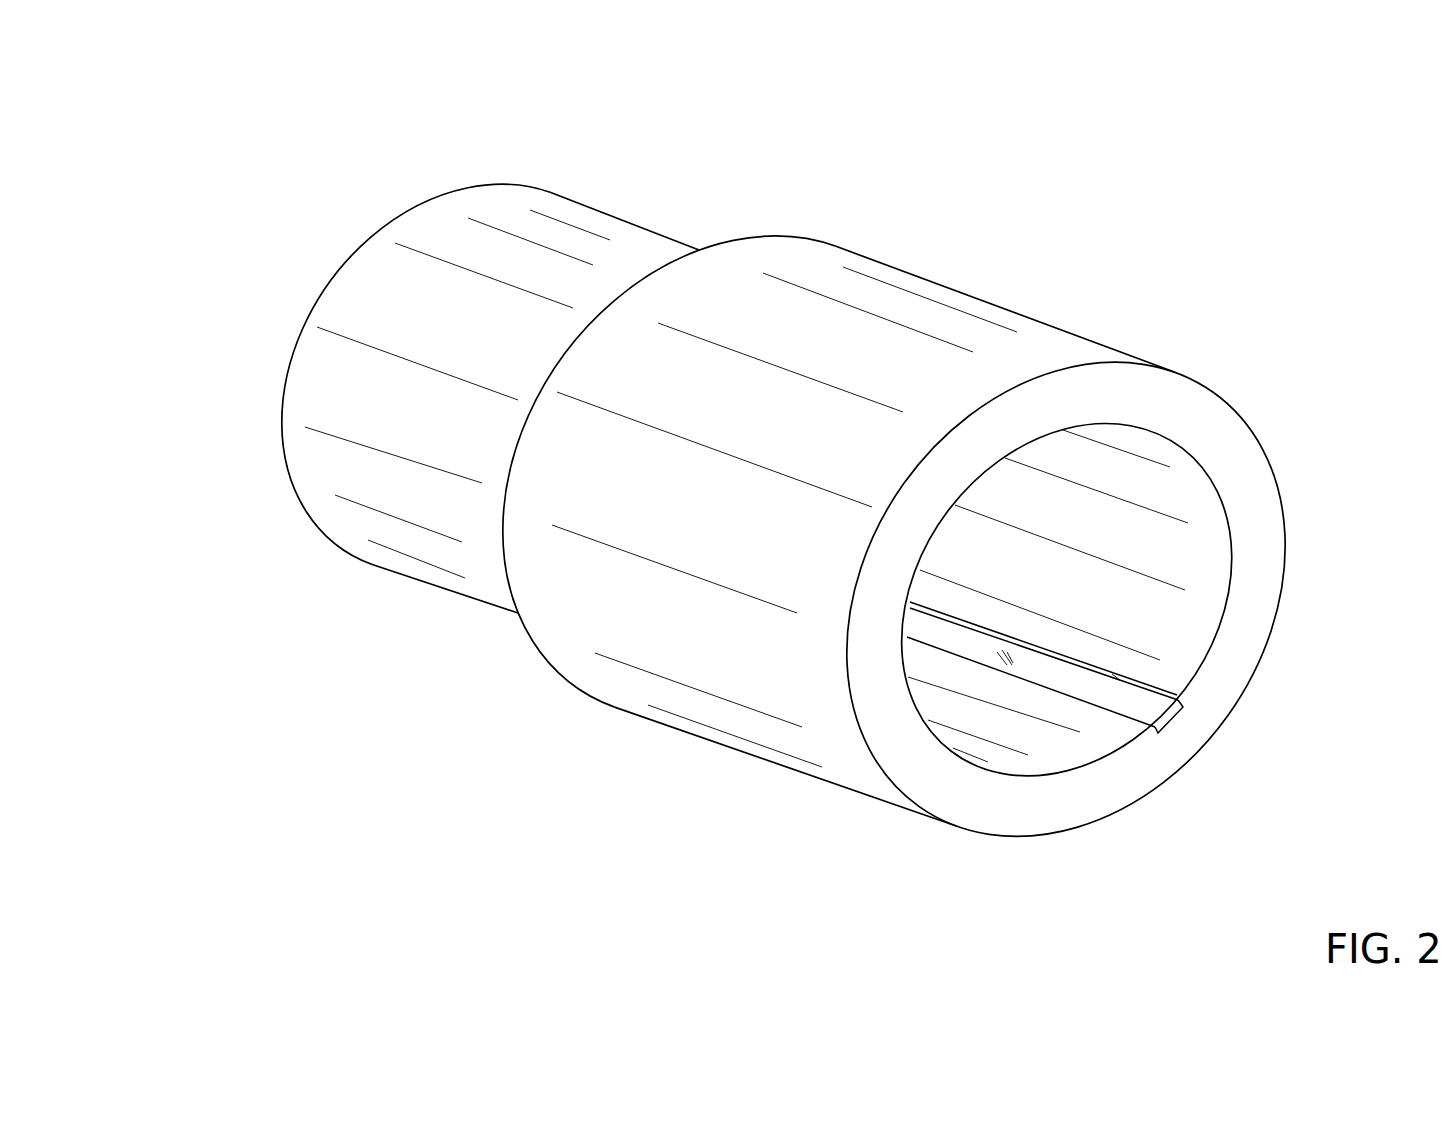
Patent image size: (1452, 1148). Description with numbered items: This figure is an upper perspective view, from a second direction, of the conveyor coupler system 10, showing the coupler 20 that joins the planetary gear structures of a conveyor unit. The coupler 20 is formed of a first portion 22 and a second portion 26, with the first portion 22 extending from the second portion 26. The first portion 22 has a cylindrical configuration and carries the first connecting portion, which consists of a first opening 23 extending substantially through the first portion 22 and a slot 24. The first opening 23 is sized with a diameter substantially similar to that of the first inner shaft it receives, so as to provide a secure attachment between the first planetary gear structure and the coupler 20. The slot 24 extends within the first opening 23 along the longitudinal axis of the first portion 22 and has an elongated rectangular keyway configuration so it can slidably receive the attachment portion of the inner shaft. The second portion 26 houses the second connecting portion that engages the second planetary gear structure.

The conveyor coupler system 10 is at (753, 485).
The coupler 20 is at (975, 287).
The first portion 22 is at (1051, 357).
The first opening 23 is at (1230, 533).
The slot 24 is at (1183, 708).
The second portion 26 is at (505, 212).